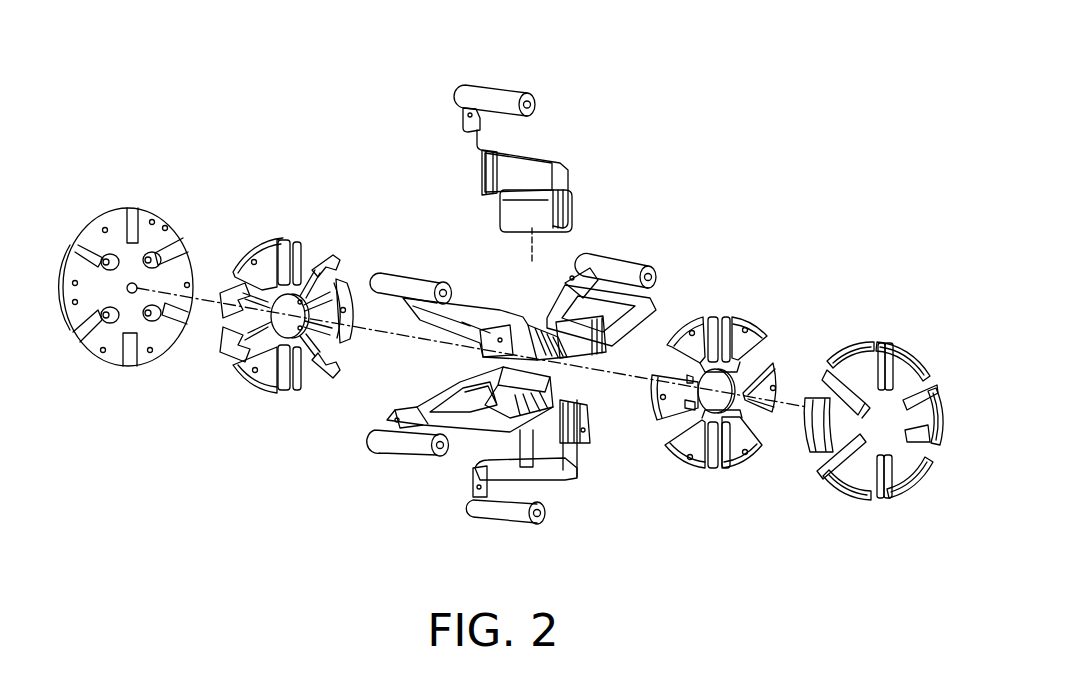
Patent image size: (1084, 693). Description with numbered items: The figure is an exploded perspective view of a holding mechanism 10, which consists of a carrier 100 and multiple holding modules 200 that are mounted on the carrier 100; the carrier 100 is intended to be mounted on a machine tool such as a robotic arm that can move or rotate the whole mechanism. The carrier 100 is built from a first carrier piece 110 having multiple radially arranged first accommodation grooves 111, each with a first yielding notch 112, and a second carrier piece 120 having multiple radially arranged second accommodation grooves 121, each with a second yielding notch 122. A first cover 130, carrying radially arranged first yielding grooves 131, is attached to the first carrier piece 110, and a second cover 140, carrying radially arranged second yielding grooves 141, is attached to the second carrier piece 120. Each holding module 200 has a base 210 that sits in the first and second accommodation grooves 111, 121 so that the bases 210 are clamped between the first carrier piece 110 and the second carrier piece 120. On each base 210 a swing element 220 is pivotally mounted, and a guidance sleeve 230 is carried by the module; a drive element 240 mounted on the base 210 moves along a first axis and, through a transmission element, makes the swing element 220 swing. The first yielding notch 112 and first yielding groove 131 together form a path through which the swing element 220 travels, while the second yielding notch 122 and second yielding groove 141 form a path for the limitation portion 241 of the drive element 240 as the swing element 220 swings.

The holding mechanism 10 is at (812, 140).
The carrier 100 is at (795, 381).
The first carrier piece 110 is at (729, 391).
The first accommodation grooves 111 is at (718, 342).
The first yielding notch 112 is at (717, 320).
The second carrier piece 120 is at (276, 325).
The second accommodation grooves 121 is at (287, 268).
The second yielding notch 122 is at (287, 238).
The first cover 130 is at (875, 414).
The first yielding grooves 131 is at (827, 292).
The second cover 140 is at (130, 299).
The second yielding grooves 141 is at (173, 248).
The holding modules 200 is at (537, 297).
The base 210 is at (533, 205).
The swing element 220 is at (563, 173).
The guidance sleeve 230 is at (492, 98).
The drive element 240 is at (485, 183).
The limitation portion 241 is at (478, 123).